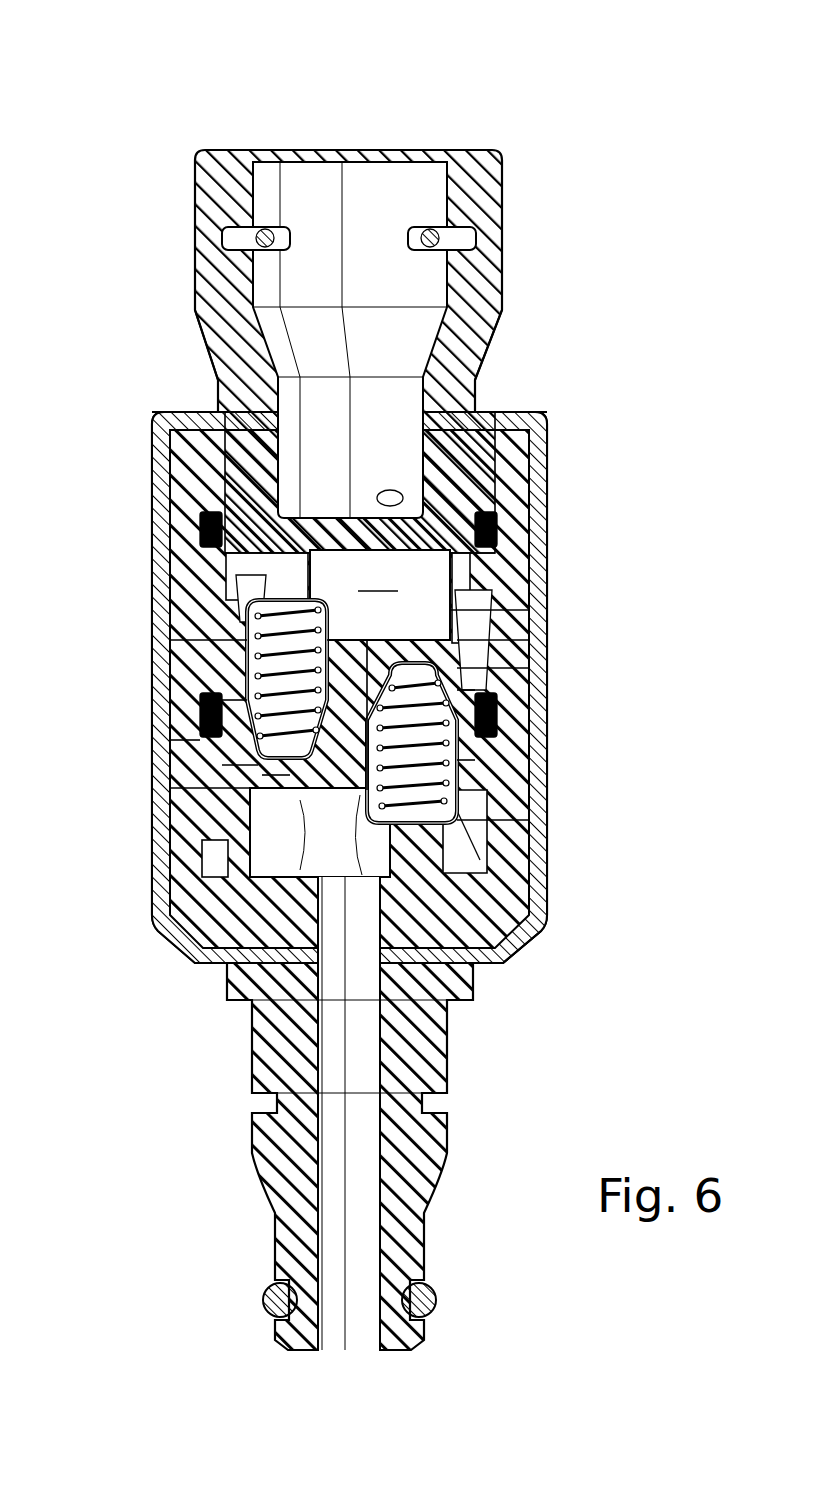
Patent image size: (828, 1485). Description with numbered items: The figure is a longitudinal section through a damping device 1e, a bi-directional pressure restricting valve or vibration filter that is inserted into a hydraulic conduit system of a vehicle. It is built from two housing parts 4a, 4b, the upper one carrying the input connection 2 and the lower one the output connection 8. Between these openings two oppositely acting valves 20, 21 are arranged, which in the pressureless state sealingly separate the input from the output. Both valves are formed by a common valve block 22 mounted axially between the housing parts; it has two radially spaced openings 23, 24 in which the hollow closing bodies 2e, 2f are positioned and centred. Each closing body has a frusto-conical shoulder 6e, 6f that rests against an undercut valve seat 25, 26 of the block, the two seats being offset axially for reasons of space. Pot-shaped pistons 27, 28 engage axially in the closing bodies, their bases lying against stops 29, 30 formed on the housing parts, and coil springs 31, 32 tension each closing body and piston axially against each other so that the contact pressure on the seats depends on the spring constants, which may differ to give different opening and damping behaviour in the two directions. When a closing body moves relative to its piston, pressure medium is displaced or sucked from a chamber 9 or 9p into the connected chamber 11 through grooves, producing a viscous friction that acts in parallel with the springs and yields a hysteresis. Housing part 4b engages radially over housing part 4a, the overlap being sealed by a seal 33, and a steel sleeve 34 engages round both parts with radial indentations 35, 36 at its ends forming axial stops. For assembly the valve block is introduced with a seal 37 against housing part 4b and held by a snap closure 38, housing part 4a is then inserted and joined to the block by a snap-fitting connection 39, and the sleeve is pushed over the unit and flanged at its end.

The damping device 1e is at (528, 70).
The connection 2 is at (375, 178).
The housing part 4a is at (501, 286).
The housing part 4b is at (440, 1137).
The connection 8 is at (368, 1180).
The chamber 9 is at (426, 655).
The chamber 9p is at (246, 646).
The chamber 11 is at (262, 870).
The valve 20 is at (520, 648).
The valve 21 is at (225, 800).
The valve block 22 is at (520, 790).
The opening 23 is at (520, 610).
The opening 24 is at (228, 868).
The valve seat 25 is at (520, 668).
The valve seat 26 is at (250, 765).
The pot-shaped piston 27 is at (520, 818).
The pot-shaped piston 28 is at (236, 618).
The stop 29 is at (540, 882).
The stop 30 is at (232, 560).
The coil spring 31 is at (520, 728).
The coil spring 32 is at (208, 668).
The seal 33 is at (498, 530).
The sleeve 34 is at (548, 450).
The radial indentation 35 is at (503, 412).
The radial indentation 36 is at (510, 952).
The seal 37 is at (540, 718).
The snap closure 38 is at (280, 788).
The snap-fitting connection 39 is at (520, 590).
The closing body 2e is at (520, 760).
The closing body 2f is at (230, 700).
The frusto-conical shoulder 6e is at (520, 690).
The frusto-conical shoulder 6f is at (215, 740).